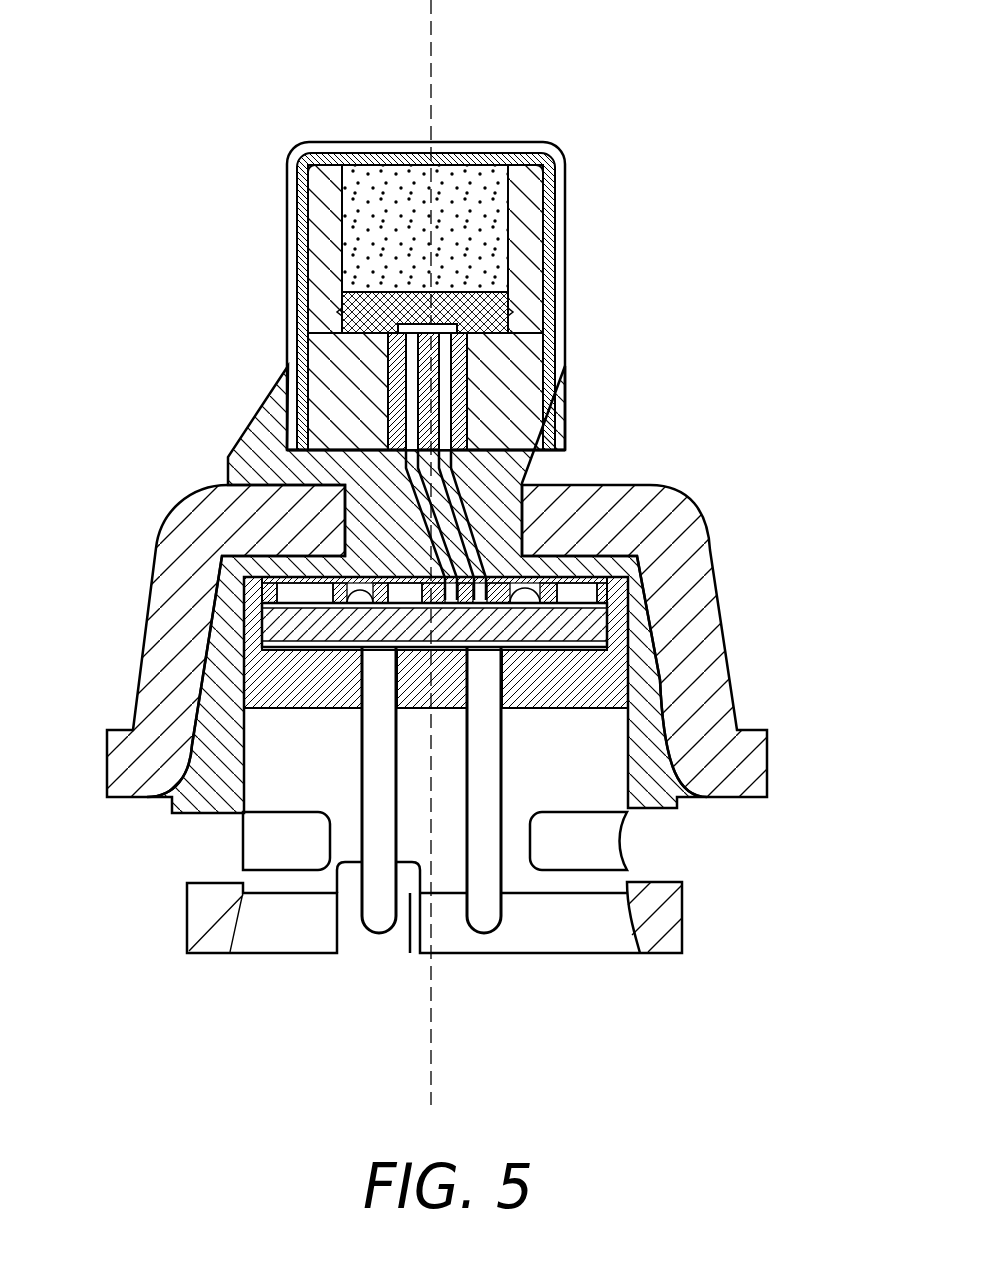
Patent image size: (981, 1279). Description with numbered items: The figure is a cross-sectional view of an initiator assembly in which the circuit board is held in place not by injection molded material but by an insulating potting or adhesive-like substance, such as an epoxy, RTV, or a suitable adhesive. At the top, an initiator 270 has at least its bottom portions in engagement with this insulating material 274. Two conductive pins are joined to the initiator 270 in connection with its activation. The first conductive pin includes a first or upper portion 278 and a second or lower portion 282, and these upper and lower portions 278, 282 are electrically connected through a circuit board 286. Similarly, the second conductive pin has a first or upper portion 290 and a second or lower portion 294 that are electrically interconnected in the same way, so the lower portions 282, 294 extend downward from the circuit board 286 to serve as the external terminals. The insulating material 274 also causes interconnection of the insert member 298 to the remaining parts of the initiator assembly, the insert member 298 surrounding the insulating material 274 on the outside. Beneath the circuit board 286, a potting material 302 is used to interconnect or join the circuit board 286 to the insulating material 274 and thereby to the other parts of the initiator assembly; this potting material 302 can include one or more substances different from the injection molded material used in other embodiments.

The initiator 270 is at (567, 245).
The insulating material 274 is at (597, 466).
The upper portion of first conductive pin 278 is at (410, 450).
The upper portion of second conductive pin 290 is at (455, 487).
The lower portion of first conductive pin 282 is at (378, 767).
The lower portion of second conductive pin 294 is at (482, 763).
The circuit board 286 is at (258, 628).
The insert member 298 is at (723, 630).
The potting material 302 is at (245, 687).